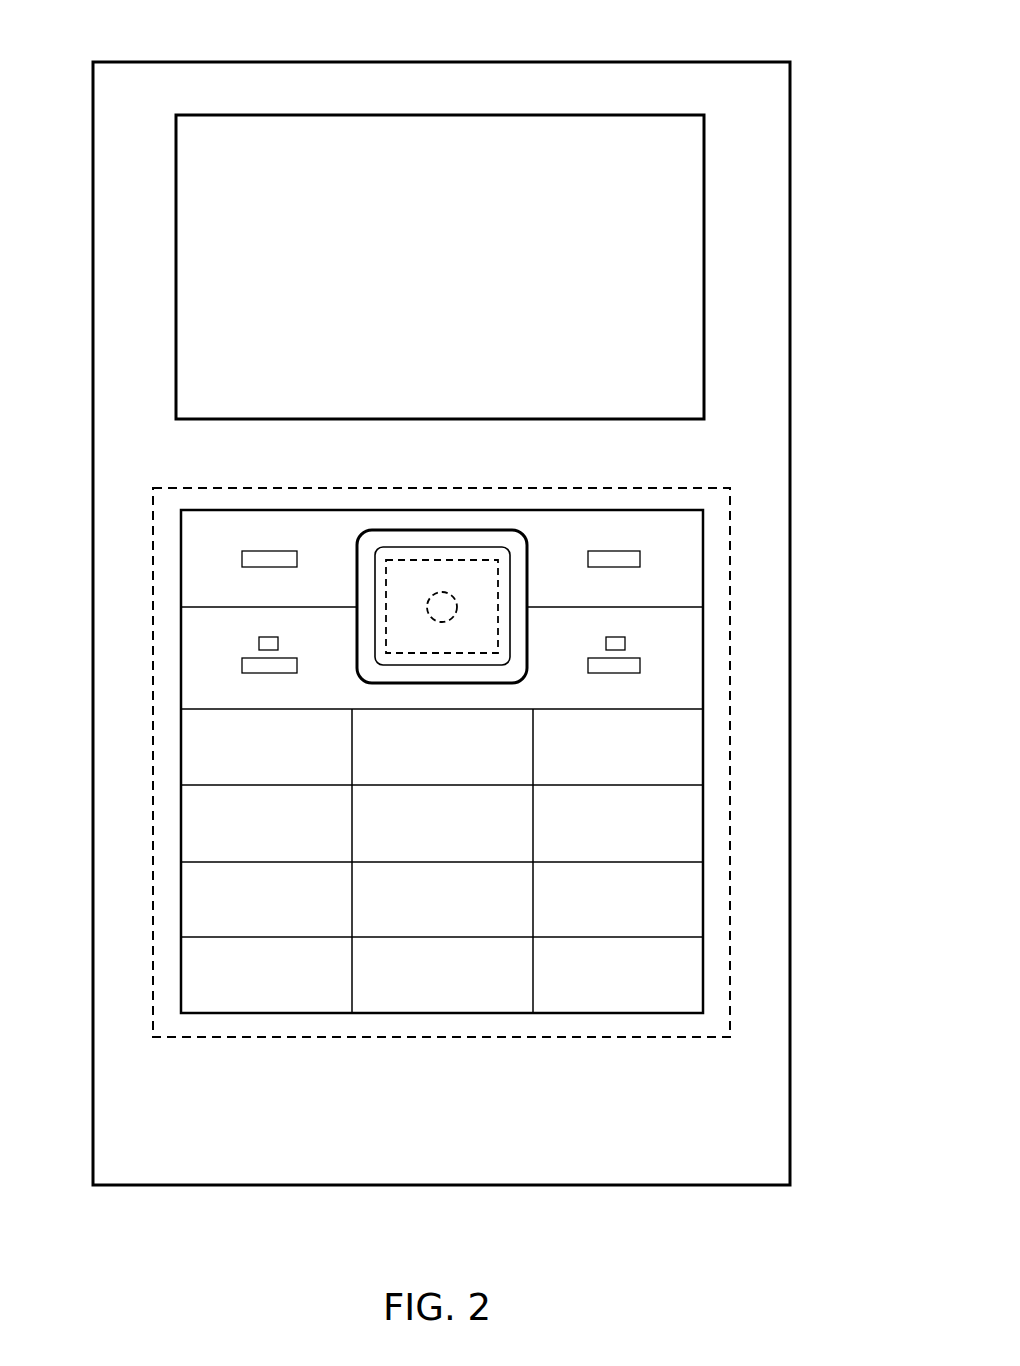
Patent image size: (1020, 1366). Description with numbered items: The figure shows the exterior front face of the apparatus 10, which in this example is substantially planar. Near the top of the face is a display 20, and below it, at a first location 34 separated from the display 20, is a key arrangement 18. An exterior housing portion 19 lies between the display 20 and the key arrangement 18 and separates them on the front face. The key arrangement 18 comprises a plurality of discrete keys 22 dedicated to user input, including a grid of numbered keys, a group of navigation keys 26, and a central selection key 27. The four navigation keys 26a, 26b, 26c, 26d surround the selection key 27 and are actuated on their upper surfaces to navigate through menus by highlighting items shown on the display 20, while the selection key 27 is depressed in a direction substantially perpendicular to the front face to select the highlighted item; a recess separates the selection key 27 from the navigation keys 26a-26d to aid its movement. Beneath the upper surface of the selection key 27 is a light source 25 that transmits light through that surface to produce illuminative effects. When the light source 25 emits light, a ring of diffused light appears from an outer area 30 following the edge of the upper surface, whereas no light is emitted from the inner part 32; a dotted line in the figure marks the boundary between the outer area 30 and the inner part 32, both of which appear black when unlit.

The apparatus 10 is at (727, 1185).
The key arrangement 18 is at (322, 548).
The exterior housing portion 19 is at (412, 465).
The display 20 is at (618, 115).
The discrete keys 22 is at (220, 743).
The light source 25 is at (443, 588).
The navigation keys 26 is at (459, 591).
The navigation key 26a is at (437, 523).
The navigation key 26b is at (583, 606).
The navigation key 26c is at (443, 675).
The navigation key 26d is at (367, 600).
The selection key 27 is at (503, 662).
The outer area of upper surface 30 is at (419, 542).
The inner part of upper surface 32 is at (408, 590).
The first location 34 is at (628, 1037).